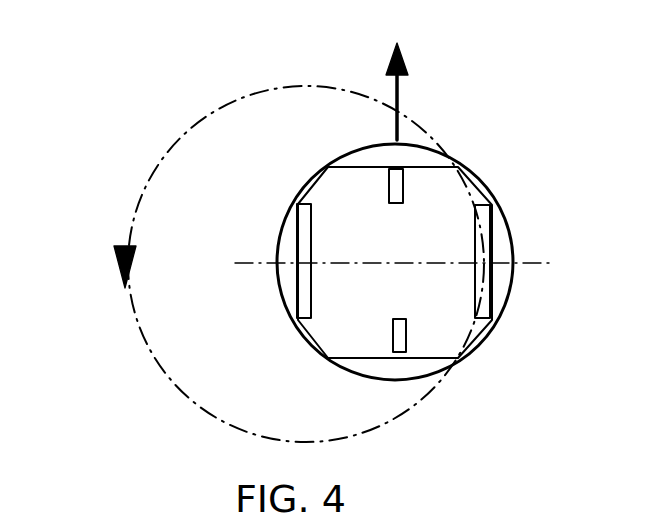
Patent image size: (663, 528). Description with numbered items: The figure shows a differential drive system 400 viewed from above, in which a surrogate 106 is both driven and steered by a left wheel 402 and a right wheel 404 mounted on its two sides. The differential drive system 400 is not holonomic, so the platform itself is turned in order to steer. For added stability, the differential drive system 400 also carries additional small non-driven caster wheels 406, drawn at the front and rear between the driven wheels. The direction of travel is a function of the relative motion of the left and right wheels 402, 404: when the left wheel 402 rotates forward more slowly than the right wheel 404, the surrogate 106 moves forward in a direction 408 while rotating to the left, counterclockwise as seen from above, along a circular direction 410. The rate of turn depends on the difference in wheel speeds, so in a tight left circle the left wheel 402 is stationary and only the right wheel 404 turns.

The surrogate 106 is at (418, 254).
The differential drive system 400 is at (508, 164).
The left wheel 402 is at (297, 258).
The right wheel 404 is at (490, 250).
The small non-driven caster wheels 406 is at (403, 183).
The direction 408 is at (399, 94).
The circular direction 410 is at (128, 208).